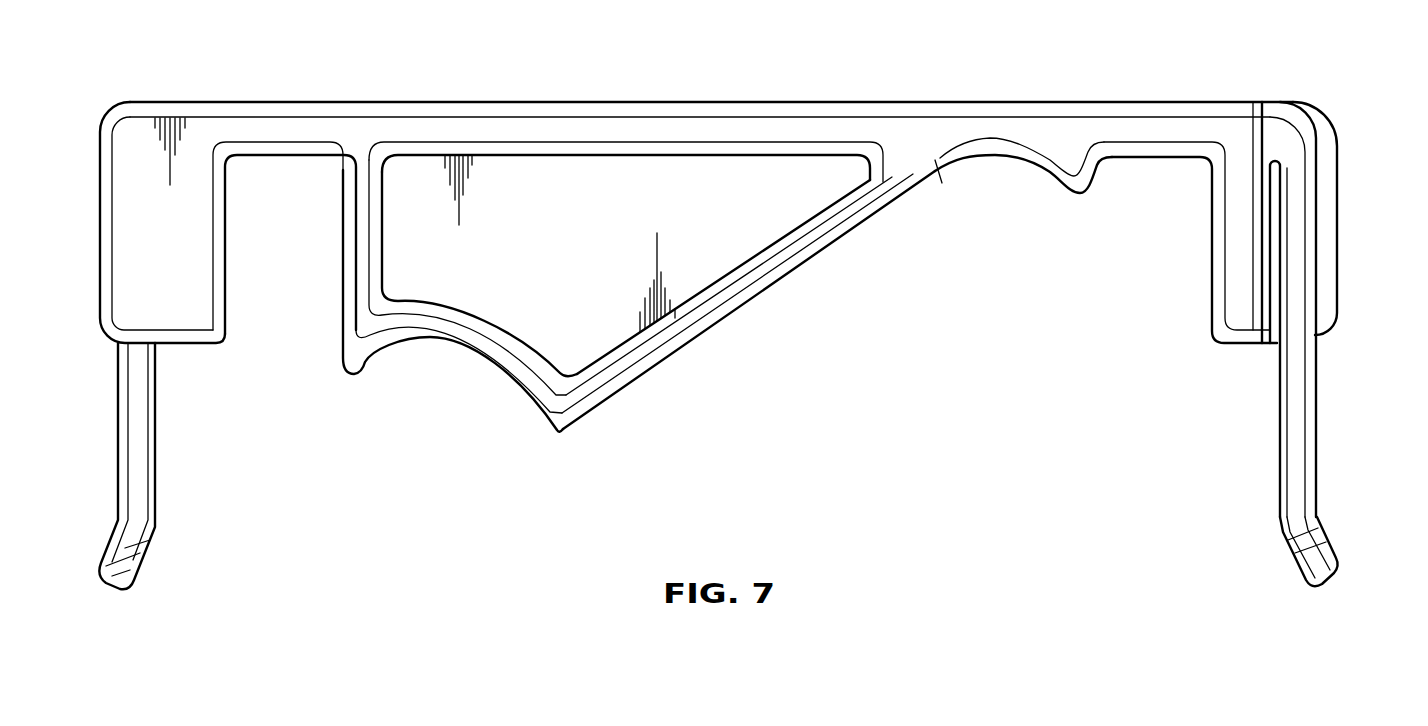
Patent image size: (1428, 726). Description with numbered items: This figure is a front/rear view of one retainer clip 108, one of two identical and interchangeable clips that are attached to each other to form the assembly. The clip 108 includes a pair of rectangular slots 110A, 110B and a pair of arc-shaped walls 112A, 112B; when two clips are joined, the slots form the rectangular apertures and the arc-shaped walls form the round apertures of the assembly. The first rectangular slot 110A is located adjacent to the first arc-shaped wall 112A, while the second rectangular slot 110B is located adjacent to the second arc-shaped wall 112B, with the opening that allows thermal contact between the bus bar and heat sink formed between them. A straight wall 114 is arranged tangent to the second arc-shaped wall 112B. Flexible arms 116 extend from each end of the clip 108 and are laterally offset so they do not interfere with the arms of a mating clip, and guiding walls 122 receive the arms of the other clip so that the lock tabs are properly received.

The retainer clip 108 is at (652, 101).
The first rectangular slot 110A is at (283, 298).
The second rectangular slot 110B is at (1143, 166).
The first arc-shaped wall 112A is at (455, 348).
The second arc-shaped wall 112B is at (1001, 160).
The straight wall 114 is at (713, 329).
The flexible arm 116 is at (118, 428).
The guiding wall 122 is at (99, 222).